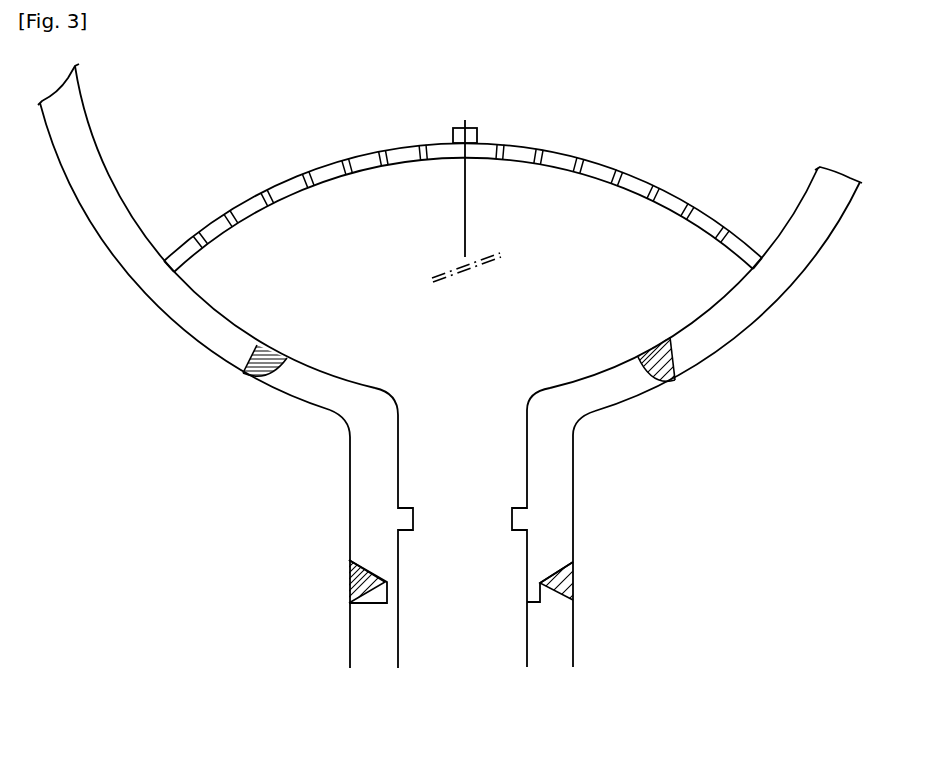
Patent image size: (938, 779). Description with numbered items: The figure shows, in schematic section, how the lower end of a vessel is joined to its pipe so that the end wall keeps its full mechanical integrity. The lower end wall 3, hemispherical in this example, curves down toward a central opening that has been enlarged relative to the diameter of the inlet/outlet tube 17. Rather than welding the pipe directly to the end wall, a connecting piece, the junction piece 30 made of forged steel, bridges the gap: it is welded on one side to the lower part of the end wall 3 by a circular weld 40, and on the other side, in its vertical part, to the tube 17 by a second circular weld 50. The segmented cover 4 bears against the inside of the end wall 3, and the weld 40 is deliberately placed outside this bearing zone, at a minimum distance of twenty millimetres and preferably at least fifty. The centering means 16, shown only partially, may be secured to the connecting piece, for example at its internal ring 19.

The end wall 3 is at (176, 306).
The cover 4 is at (307, 167).
The centering means 16 is at (467, 198).
The inlet/outlet tube 17 is at (362, 645).
The internal ring 19 is at (523, 523).
The junction piece 30 is at (375, 450).
The weld 40 is at (250, 372).
The weld 50 is at (350, 582).